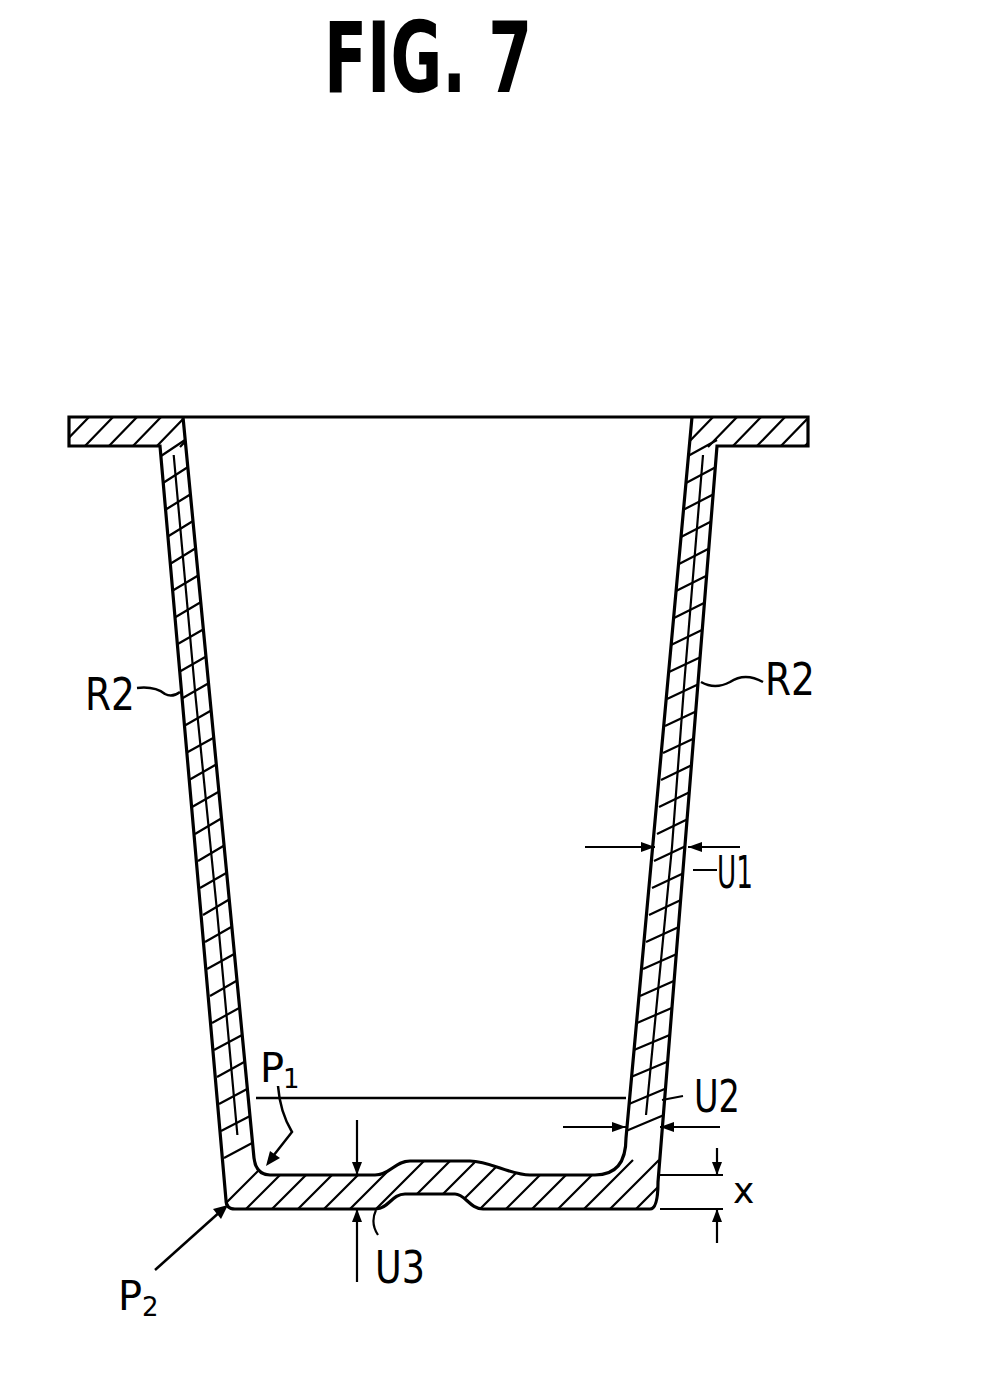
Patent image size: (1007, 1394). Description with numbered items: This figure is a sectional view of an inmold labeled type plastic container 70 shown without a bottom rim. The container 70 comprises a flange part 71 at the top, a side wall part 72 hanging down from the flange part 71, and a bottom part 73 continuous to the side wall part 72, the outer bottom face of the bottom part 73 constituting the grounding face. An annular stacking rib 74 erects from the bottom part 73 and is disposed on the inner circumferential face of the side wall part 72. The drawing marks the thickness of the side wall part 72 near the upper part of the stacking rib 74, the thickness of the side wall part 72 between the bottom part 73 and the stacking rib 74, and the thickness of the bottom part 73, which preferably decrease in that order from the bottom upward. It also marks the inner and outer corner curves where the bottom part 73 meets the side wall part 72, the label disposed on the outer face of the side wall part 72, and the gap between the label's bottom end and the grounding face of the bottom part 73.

The inmold labeled type plastic container 70 is at (532, 392).
The flange part 71 is at (767, 417).
The side wall part 72 is at (668, 652).
The bottom part 73 is at (557, 1210).
The annular stacking rib 74 is at (630, 1100).